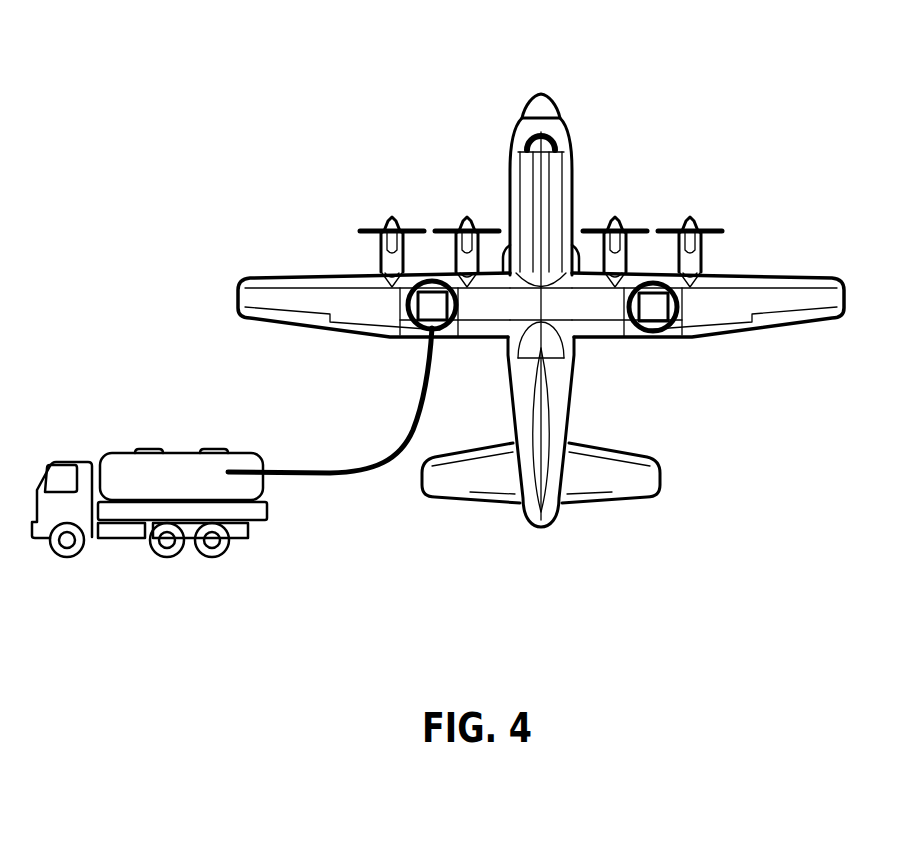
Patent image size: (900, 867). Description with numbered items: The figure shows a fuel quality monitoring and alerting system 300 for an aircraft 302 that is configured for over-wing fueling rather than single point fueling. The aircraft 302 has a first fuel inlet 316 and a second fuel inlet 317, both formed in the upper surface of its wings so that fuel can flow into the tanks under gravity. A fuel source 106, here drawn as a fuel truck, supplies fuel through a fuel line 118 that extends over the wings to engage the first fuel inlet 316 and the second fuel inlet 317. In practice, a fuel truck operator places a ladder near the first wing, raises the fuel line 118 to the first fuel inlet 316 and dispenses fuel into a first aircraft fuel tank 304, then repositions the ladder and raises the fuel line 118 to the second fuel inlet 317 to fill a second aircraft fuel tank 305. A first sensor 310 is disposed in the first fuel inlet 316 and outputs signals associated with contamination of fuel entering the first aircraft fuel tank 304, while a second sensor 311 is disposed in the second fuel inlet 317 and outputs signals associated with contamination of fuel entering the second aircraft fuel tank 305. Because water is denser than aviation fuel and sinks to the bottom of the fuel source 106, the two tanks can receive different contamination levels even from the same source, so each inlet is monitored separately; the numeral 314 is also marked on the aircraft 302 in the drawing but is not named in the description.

The fuel quality monitoring and alerting system 300 is at (730, 106).
The aircraft 302 is at (258, 206).
The first aircraft fuel tank 304 is at (432, 270).
The second aircraft fuel tank 305 is at (666, 265).
The first sensor 310 is at (413, 294).
The second sensor 311 is at (677, 303).
The fuselage 314 is at (508, 125).
The first fuel inlet 316 is at (417, 328).
The second fuel inlet 317 is at (675, 330).
The fuel source 106 is at (223, 498).
The fuel line 118 is at (347, 480).